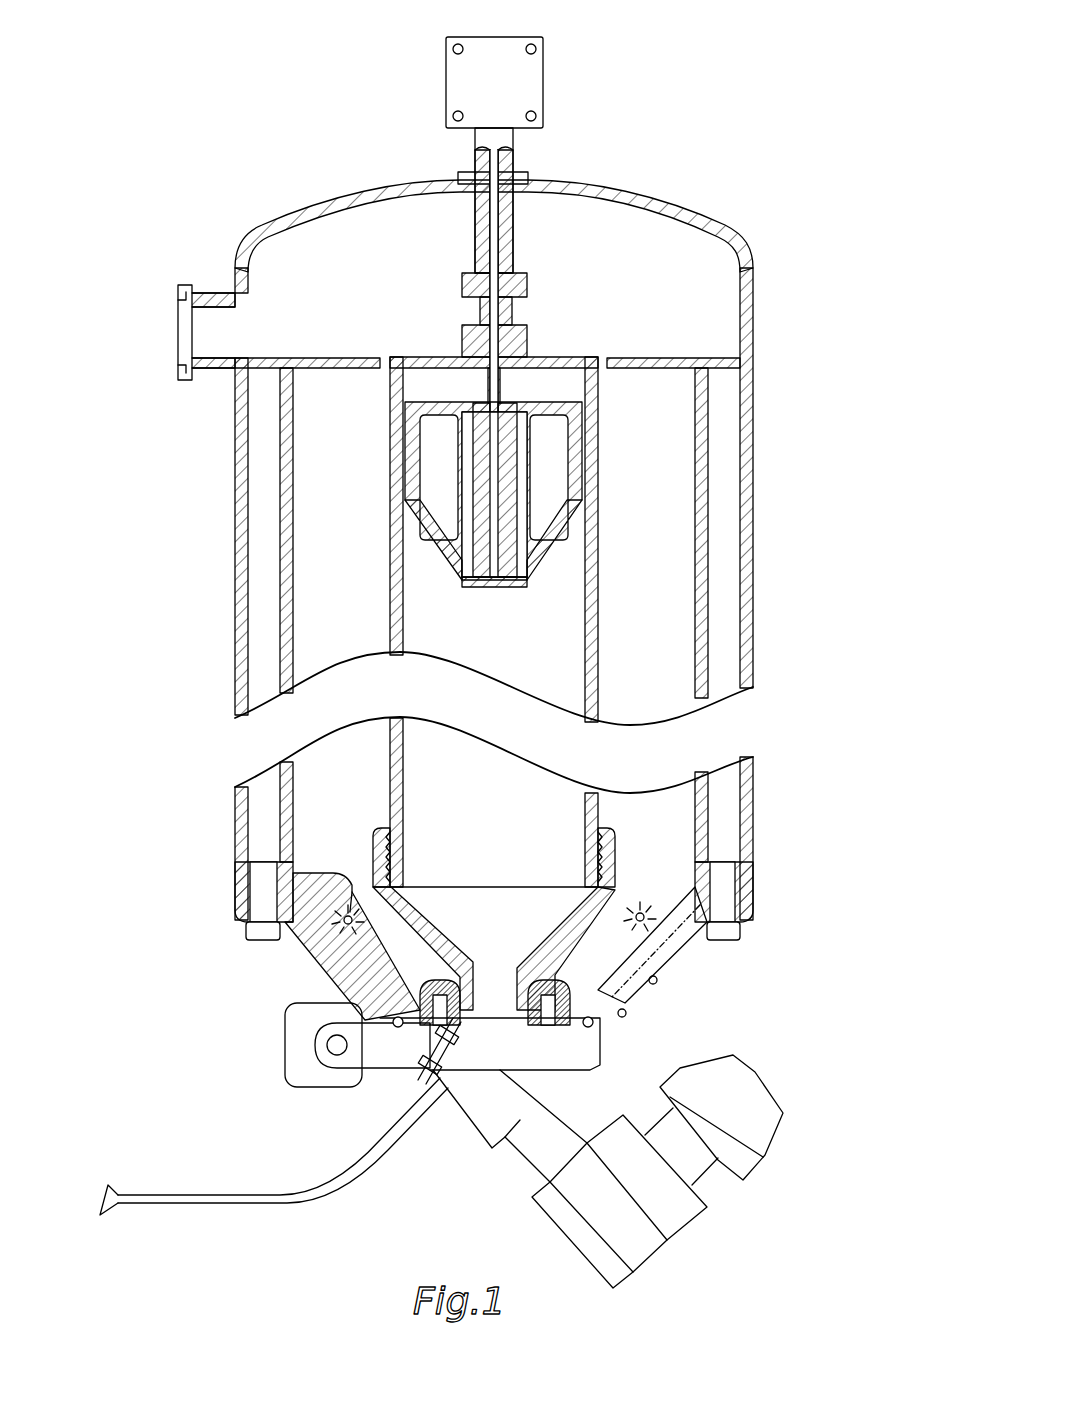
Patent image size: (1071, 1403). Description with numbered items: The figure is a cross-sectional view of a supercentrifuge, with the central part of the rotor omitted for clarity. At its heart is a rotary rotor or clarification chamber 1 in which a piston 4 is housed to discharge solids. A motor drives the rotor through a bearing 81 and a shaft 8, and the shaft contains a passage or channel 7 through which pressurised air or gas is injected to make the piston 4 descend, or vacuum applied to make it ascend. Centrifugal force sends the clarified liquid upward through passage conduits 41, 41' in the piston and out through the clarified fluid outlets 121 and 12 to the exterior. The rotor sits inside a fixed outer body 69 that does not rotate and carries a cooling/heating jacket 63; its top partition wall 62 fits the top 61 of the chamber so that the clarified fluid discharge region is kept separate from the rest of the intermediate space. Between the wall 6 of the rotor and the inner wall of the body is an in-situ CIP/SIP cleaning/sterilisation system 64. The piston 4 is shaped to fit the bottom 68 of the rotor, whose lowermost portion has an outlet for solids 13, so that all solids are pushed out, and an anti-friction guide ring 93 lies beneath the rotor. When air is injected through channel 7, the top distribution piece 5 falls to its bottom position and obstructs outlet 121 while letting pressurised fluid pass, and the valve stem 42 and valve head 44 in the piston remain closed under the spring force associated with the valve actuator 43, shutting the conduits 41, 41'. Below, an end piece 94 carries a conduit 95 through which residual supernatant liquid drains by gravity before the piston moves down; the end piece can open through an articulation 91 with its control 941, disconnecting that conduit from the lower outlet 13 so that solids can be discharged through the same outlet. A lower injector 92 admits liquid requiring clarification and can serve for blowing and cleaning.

The rotary rotor or clarification chamber 1 is at (420, 810).
The piston 4 is at (573, 438).
The top distribution piece 5 is at (515, 325).
The wall of rotor 6 is at (600, 612).
The passage or channel 7 is at (497, 218).
The shaft 8 is at (515, 158).
The clarified fluid outlet 12 is at (178, 330).
The outlet for solids 13 is at (500, 988).
The passage conduit 41 is at (412, 540).
The passage conduit 41' is at (584, 540).
The valve stem 42 is at (495, 495).
The valve actuator 43 is at (495, 380).
The valve head 44 is at (485, 587).
The top of rotary chamber 61 is at (562, 357).
The top partition wall 62 is at (311, 358).
The cooling/heating jacket 63 is at (725, 833).
The in-situ CIP/SIP cleaning/sterilisation system 64 is at (293, 873).
The bottom of rotor 68 is at (617, 872).
The outer body 69 is at (233, 522).
The bearing 81 is at (545, 78).
The articulation 91 is at (320, 1050).
The lower injector 92 is at (412, 1072).
The anti-friction guide ring 93 is at (568, 998).
The end piece 94 is at (485, 1108).
The conduit for the discharge of supernatant liquid 95 is at (563, 1131).
The clarified fluid outlet 121 is at (470, 348).
The control 941 is at (760, 1078).